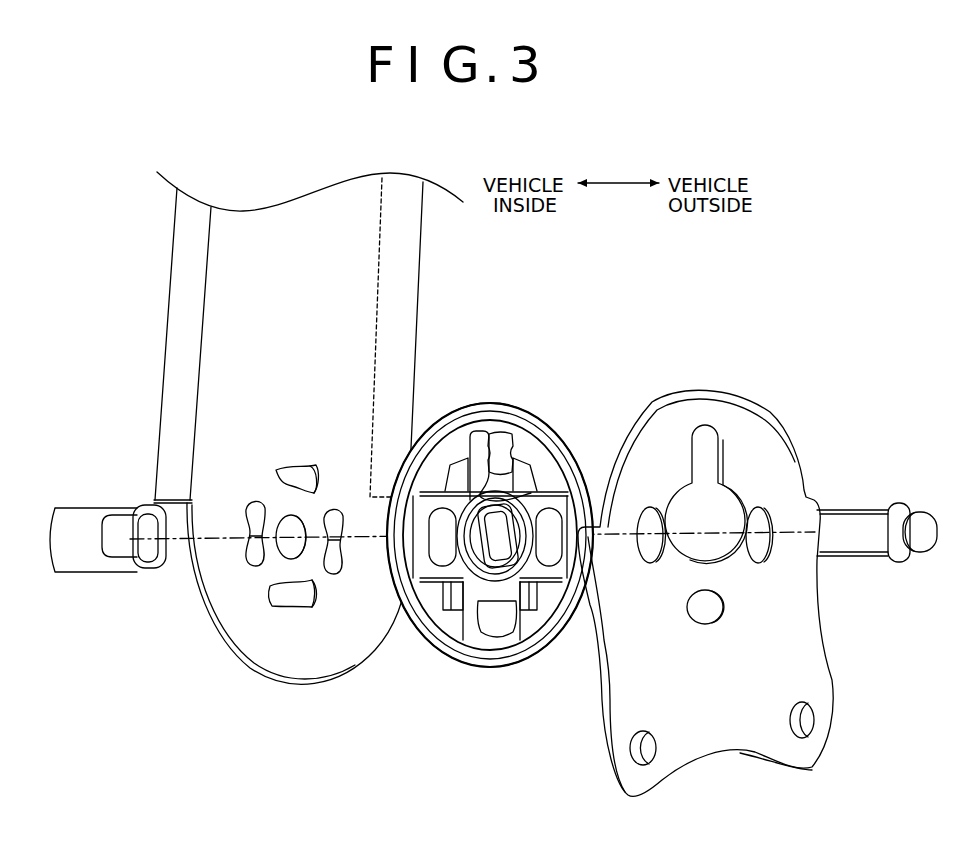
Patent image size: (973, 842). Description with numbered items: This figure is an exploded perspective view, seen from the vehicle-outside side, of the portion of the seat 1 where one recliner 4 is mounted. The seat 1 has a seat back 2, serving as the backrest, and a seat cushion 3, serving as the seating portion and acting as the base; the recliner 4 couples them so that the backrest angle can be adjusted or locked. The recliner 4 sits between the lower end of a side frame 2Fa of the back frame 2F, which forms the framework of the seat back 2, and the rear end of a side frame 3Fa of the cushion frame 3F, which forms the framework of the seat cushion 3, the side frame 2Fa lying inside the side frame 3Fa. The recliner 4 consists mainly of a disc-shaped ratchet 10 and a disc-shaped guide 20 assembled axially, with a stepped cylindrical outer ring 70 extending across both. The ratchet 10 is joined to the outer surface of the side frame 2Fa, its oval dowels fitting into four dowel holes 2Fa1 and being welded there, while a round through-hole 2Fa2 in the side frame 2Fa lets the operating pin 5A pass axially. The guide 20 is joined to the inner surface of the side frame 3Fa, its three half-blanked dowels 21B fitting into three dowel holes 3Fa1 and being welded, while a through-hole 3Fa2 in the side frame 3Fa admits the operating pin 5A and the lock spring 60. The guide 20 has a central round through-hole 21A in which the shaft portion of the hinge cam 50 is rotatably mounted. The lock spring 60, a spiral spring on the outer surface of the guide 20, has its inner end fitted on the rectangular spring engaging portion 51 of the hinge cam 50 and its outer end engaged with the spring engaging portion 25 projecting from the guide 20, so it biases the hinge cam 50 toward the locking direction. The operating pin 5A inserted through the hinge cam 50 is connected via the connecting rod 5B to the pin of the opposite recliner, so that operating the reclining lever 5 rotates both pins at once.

The seat 1 is at (822, 266).
The seat back 2 is at (146, 271).
The back frame 2F is at (225, 494).
The side frame 2Fa is at (168, 323).
The dowel holes 2Fa1 is at (252, 518).
The through-hole 2Fa2 is at (288, 546).
The seat cushion 3 is at (659, 367).
The cushion frame 3F is at (706, 571).
The side frame 3Fa is at (757, 410).
The dowel holes 3Fa1 is at (750, 604).
The through-hole 3Fa2 is at (702, 510).
The recliner 4 is at (526, 412).
The reclining lever 5 is at (877, 509).
The operating pin 5A is at (866, 520).
The connecting rod 5B is at (82, 522).
The ratchet 10 is at (435, 600).
The guide 20 is at (505, 646).
The through-hole 21A is at (447, 600).
The dowels 21B is at (434, 466).
The spring engaging portion 25 is at (498, 440).
The hinge cam 50 is at (531, 635).
The spring engaging portion 51 is at (527, 614).
The lock spring 60 is at (538, 486).
The outer ring 70 is at (478, 426).